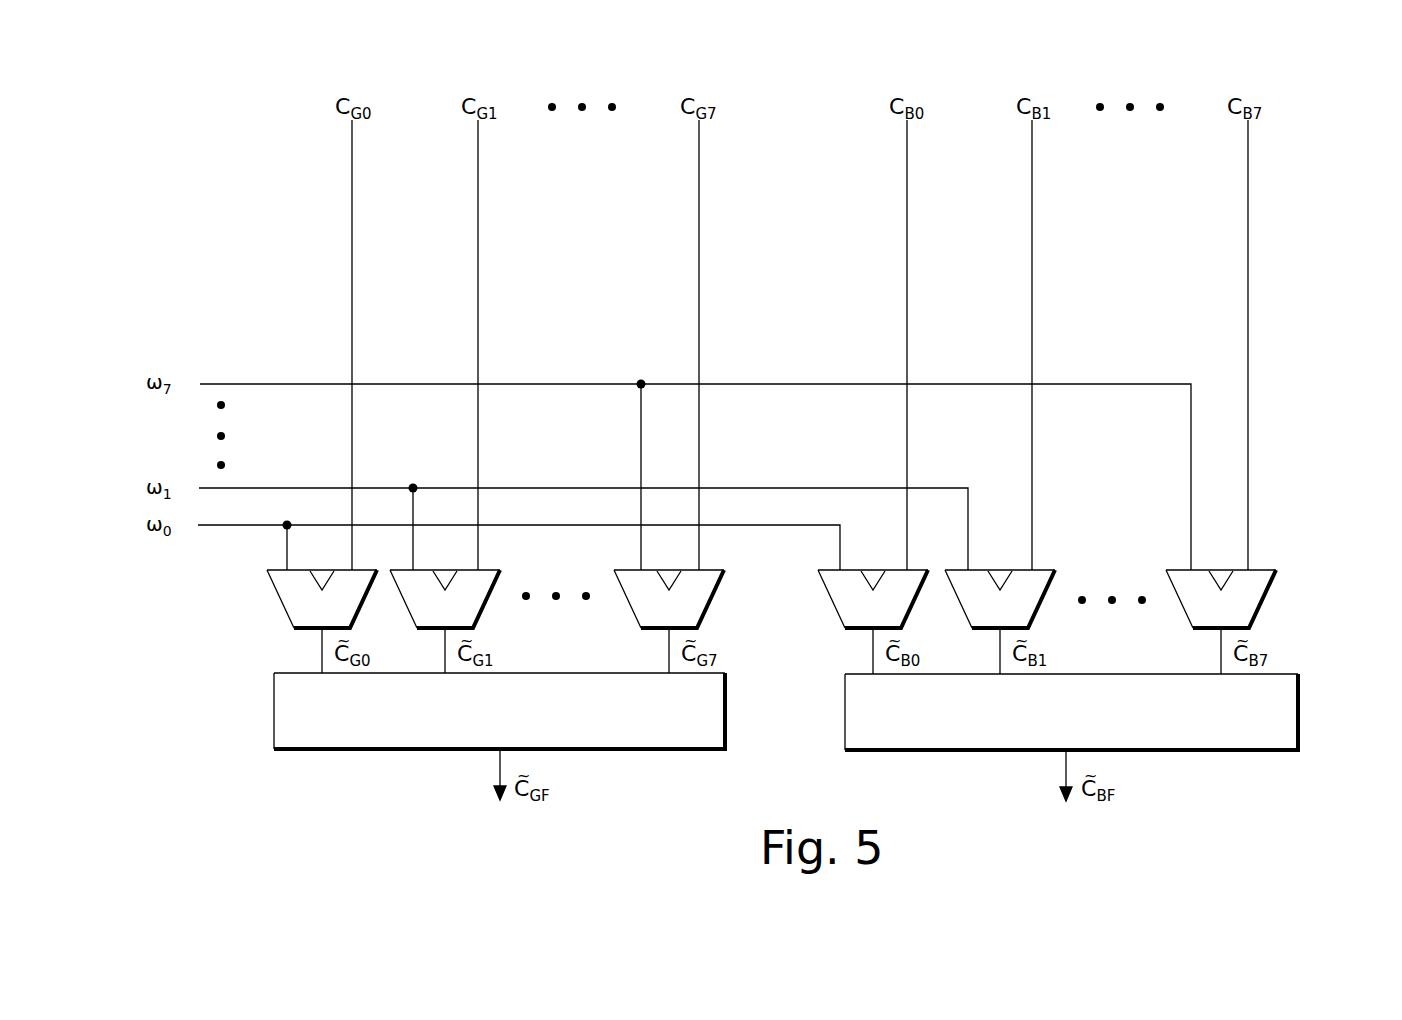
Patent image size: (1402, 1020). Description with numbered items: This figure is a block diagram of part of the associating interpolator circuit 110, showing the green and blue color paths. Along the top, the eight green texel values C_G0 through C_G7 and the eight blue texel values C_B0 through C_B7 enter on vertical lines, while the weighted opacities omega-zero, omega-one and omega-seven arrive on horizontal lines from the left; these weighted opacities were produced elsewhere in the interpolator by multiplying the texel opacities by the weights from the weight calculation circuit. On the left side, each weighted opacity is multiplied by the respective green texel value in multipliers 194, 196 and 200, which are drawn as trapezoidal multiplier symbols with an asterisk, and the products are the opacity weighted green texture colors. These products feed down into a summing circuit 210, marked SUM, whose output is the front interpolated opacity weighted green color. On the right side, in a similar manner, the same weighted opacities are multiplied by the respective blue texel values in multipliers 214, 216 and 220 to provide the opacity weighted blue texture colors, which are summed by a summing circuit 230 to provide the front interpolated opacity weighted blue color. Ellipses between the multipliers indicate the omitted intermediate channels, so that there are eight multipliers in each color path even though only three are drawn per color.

The associating interpolator circuit 110 is at (173, 670).
The multiplier 194 is at (275, 598).
The multiplier 196 is at (478, 616).
The multiplier 200 is at (634, 614).
The summing circuit 210 is at (273, 708).
The multiplier 214 is at (832, 604).
The multiplier 216 is at (1044, 570).
The multiplier 220 is at (1170, 580).
The summing circuit 230 is at (1299, 710).